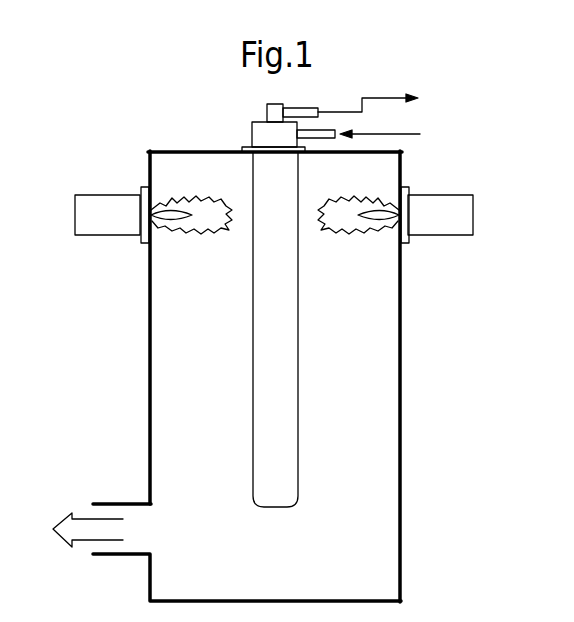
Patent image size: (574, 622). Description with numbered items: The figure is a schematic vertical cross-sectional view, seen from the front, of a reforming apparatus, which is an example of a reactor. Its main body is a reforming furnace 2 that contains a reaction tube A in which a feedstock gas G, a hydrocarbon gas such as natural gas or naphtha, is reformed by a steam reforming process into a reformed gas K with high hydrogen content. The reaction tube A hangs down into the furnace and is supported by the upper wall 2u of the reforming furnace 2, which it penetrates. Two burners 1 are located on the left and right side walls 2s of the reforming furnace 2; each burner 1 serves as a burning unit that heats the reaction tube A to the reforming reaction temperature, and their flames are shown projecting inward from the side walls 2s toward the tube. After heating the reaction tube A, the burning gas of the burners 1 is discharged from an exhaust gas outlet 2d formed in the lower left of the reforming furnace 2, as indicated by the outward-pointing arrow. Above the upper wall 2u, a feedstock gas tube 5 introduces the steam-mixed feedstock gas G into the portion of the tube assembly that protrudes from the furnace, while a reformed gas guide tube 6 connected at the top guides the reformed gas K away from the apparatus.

The burner 1 is at (100, 236).
The reforming furnace 2 is at (275, 351).
The upper wall 2u is at (195, 151).
The side wall 2s is at (148, 412).
The exhaust gas outlet 2d is at (122, 502).
The feedstock gas tube 5 is at (321, 153).
The reformed gas guide tube 6 is at (298, 108).
The reaction tube A is at (246, 355).
The reformed gas K is at (380, 100).
The feedstock gas G is at (392, 134).